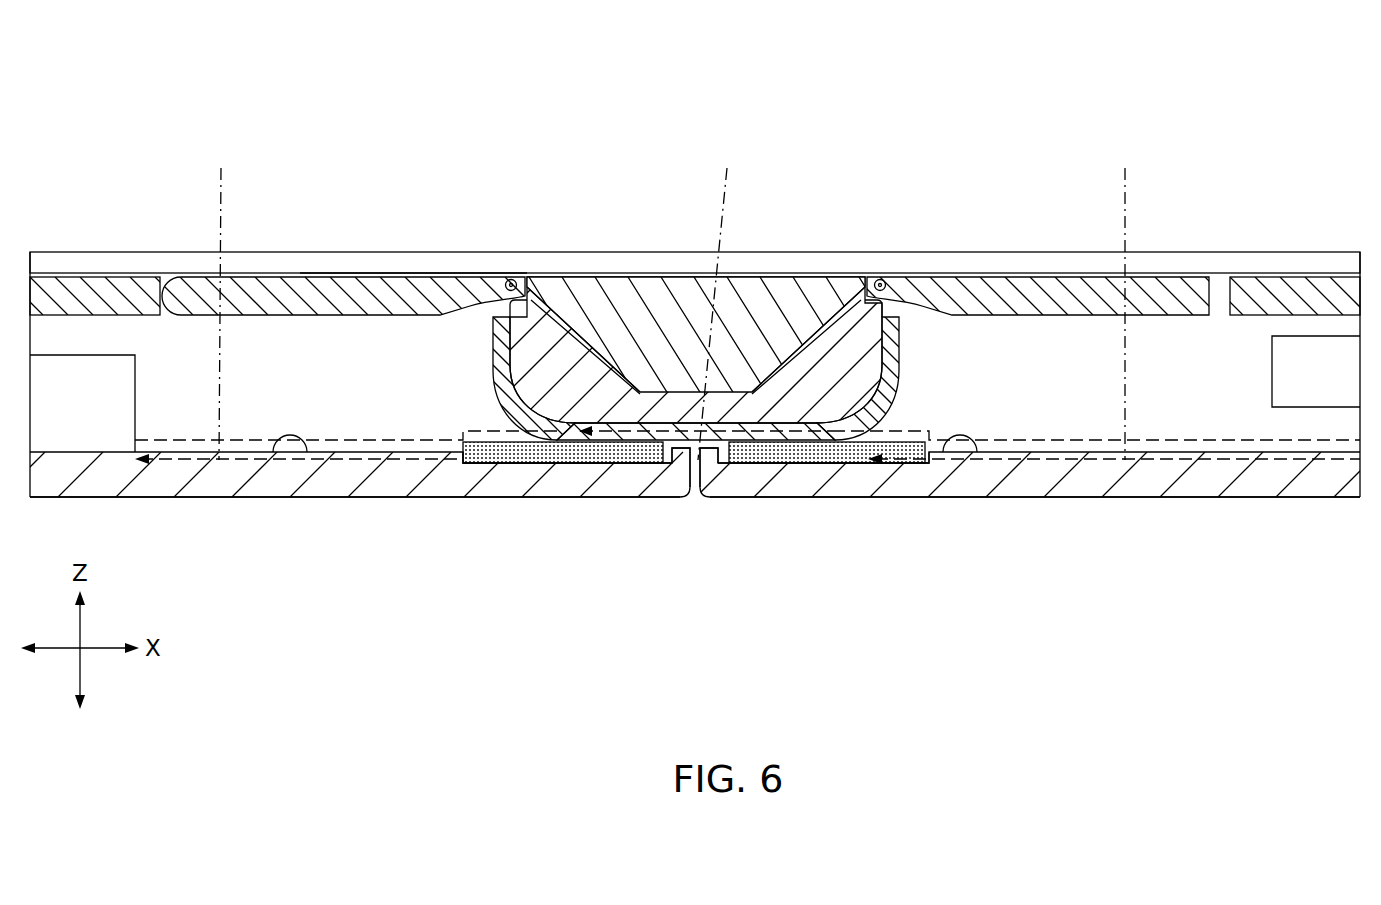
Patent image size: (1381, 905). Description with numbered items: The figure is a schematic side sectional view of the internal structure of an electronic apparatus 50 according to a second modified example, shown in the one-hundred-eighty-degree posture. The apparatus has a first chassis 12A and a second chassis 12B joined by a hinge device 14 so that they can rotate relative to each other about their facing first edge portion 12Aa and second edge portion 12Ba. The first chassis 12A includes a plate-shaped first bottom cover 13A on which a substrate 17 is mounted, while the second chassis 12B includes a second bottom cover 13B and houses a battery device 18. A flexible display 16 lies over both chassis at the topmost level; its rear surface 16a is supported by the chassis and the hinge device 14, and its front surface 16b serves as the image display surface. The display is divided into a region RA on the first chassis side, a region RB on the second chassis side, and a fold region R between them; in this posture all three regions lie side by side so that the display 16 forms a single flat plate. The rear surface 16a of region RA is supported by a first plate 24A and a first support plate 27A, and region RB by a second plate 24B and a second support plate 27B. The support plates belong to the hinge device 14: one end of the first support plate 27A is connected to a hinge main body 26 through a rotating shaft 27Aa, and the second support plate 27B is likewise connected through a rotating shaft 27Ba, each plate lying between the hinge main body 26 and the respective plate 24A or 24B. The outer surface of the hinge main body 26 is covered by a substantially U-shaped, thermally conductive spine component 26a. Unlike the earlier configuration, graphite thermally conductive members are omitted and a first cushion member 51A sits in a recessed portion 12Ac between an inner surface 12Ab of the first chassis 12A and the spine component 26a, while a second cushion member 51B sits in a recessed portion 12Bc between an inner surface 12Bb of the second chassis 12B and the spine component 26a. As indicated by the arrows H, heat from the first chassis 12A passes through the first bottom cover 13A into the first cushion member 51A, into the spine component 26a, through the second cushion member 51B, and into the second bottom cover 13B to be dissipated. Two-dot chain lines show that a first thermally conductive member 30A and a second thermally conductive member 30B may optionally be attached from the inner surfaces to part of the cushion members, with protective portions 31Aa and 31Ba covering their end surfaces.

The electronic apparatus 50 is at (84, 98).
The first chassis 12A is at (1033, 497).
The second chassis 12B is at (350, 497).
The first edge portion 12Aa is at (716, 466).
The second edge portion 12Ba is at (684, 466).
The inner surface of first chassis 12Ab is at (948, 445).
The inner surface of second chassis 12Bb is at (283, 445).
The recessed portion 12Ac is at (905, 450).
The recessed portion 12Bc is at (472, 450).
The first bottom cover 13A is at (1110, 475).
The second bottom cover 13B is at (228, 475).
The hinge device 14 is at (491, 354).
The display 16 is at (258, 253).
The rear surface 16a is at (447, 275).
The front surface 16b is at (414, 272).
The substrate 17 is at (1320, 372).
The battery device 18 is at (92, 393).
The first plate 24A is at (1308, 290).
The second plate 24B is at (67, 290).
The hinge main body 26 is at (762, 277).
The spine component 26a is at (895, 357).
The first support plate 27A is at (1040, 298).
The second support plate 27B is at (338, 298).
The rotating shaft 27Aa is at (878, 279).
The rotating shaft 27Ba is at (511, 279).
The first thermally conductive member 30A is at (1068, 440).
The second thermally conductive member 30B is at (265, 440).
The protective portion 31Aa is at (742, 445).
The protective portion 31Ba is at (650, 438).
The first cushion member 51A is at (856, 452).
The second cushion member 51B is at (550, 452).
The arrows H is at (672, 299).
The fold region R is at (697, 253).
The region RA is at (1240, 253).
The region RB is at (137, 253).